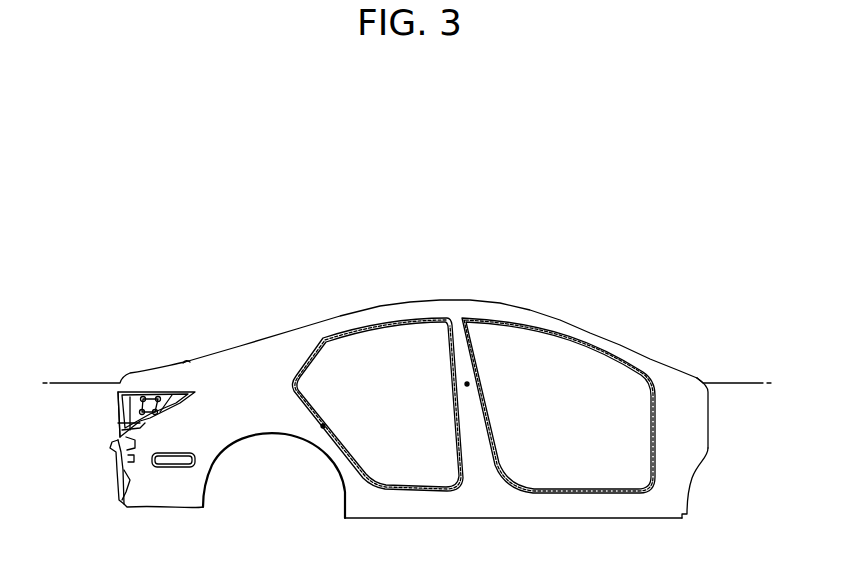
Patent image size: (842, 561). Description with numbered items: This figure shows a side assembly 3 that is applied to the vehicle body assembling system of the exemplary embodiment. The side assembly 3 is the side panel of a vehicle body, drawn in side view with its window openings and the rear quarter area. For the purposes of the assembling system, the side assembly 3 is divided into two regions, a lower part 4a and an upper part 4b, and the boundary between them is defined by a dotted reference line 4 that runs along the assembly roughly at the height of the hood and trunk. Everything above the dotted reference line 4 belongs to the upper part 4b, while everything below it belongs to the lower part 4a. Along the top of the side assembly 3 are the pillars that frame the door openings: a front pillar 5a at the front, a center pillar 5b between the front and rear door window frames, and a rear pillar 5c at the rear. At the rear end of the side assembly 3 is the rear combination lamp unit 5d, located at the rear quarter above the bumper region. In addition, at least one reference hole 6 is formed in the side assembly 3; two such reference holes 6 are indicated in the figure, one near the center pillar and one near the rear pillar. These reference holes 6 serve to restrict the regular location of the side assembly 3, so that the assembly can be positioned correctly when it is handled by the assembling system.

The side assembly 3 is at (415, 225).
The dotted reference line 4 is at (730, 382).
The lower part 4a is at (703, 481).
The upper part 4b is at (653, 343).
The front pillar 5a is at (570, 330).
The center pillar 5b is at (465, 350).
The rear pillar 5c is at (313, 402).
The rear combination lamp unit 5d is at (122, 421).
The reference hole 6 is at (323, 426).